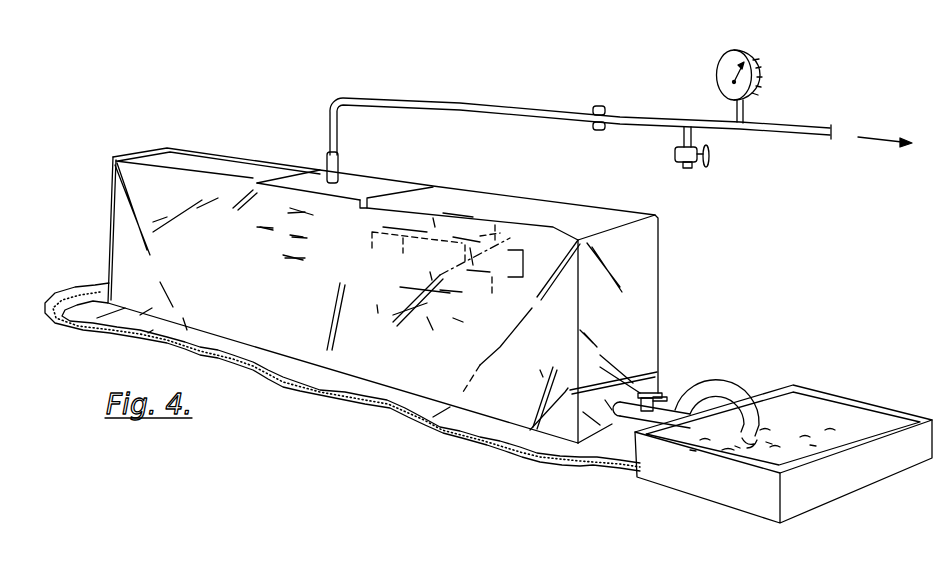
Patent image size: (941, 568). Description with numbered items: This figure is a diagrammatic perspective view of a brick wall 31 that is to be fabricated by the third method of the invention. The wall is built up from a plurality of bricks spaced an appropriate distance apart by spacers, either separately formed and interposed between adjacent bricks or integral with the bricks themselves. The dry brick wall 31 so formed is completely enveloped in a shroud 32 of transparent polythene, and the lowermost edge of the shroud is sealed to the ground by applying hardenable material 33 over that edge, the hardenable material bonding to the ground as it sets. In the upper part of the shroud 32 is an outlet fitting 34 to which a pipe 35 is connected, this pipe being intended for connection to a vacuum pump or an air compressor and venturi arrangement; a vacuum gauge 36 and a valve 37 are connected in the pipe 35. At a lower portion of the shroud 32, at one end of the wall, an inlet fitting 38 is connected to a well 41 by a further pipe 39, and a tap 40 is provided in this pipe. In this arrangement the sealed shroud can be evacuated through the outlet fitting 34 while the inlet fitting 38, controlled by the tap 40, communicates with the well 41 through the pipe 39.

The brick wall 31 is at (440, 243).
The shroud 32 is at (117, 218).
The hardenable material 33 is at (552, 462).
The outlet fitting 34 is at (382, 183).
The pipe 35 is at (455, 106).
The vacuum gauge 36 is at (760, 66).
The valve 37 is at (675, 153).
The inlet fitting 38 is at (608, 424).
The pipe 39 is at (717, 383).
The tap 40 is at (660, 394).
The well 41 is at (885, 475).